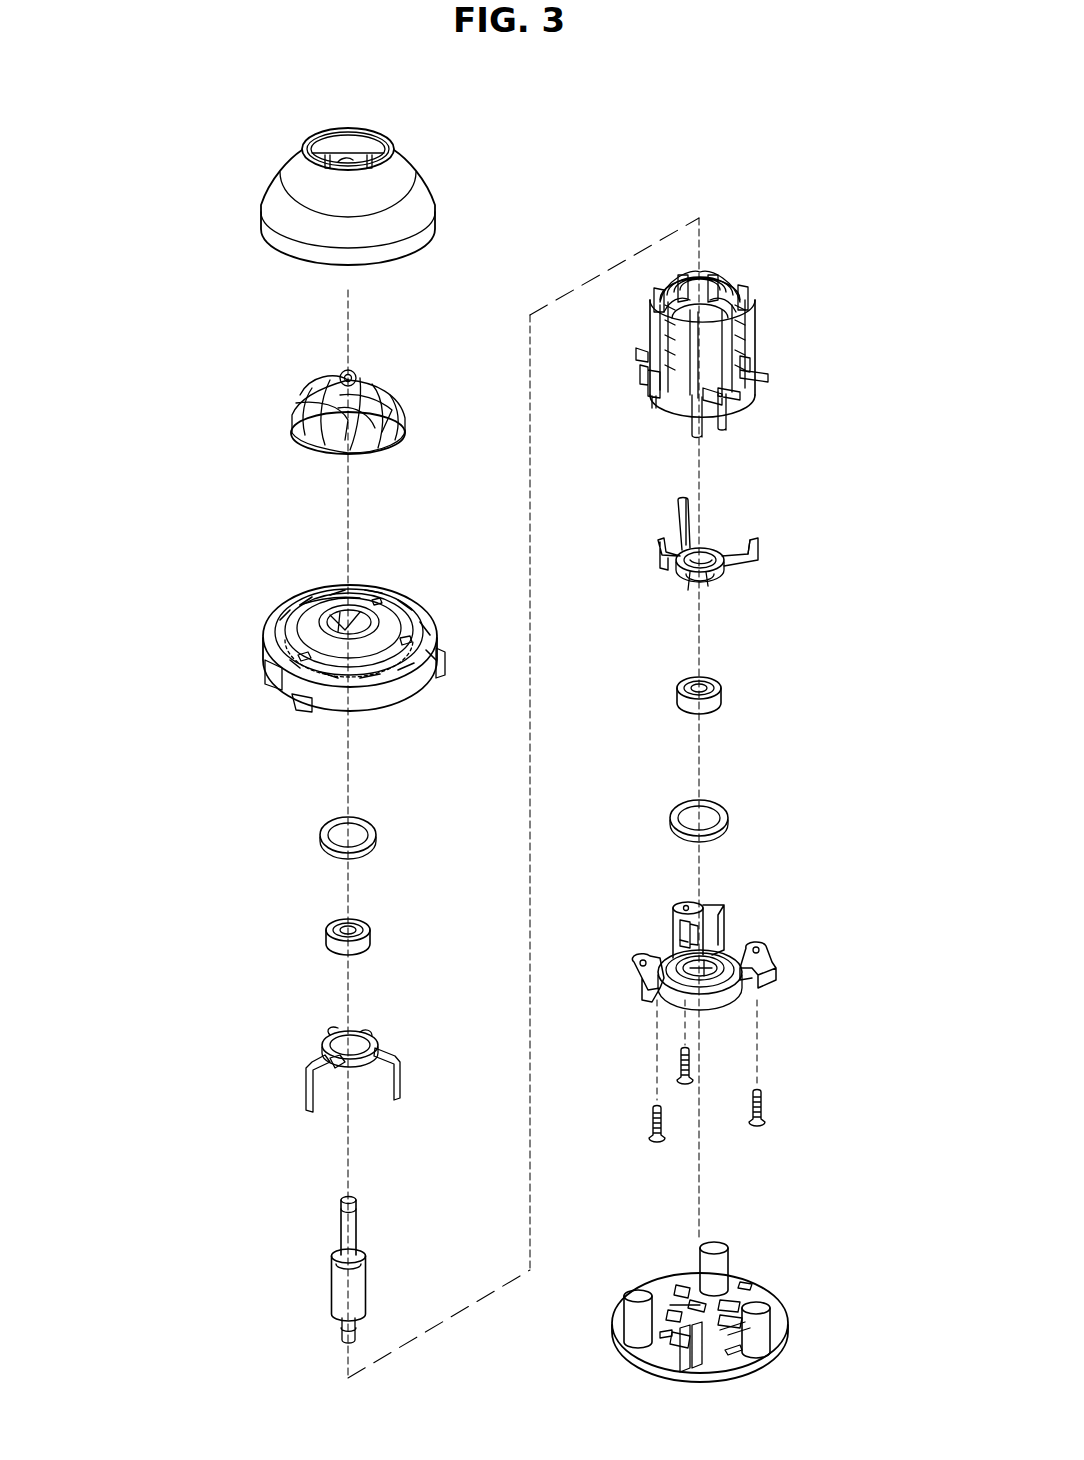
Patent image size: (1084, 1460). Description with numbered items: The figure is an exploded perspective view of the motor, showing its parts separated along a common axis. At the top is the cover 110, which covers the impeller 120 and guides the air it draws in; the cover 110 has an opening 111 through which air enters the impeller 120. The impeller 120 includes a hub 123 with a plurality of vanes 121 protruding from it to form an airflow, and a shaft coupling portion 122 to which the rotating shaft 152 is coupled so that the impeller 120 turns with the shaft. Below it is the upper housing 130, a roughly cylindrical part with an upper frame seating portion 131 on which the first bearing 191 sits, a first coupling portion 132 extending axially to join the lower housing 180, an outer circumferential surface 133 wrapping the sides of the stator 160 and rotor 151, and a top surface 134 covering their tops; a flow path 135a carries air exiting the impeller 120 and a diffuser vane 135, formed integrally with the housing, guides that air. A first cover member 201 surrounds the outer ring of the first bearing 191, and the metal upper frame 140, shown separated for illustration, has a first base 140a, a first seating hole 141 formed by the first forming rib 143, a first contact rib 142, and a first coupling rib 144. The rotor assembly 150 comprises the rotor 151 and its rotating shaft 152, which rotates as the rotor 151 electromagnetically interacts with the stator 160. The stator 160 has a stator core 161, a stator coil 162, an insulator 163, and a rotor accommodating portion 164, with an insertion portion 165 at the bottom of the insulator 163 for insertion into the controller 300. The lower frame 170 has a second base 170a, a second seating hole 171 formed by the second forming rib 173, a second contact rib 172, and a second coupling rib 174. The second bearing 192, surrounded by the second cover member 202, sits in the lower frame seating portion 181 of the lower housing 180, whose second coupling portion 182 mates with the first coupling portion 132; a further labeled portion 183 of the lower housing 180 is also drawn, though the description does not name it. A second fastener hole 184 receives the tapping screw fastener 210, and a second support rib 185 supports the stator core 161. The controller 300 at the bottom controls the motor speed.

The cover 110 is at (228, 196).
The opening 111 is at (346, 156).
The impeller 120 is at (327, 393).
The vanes 121 is at (380, 400).
The shaft coupling portion 122 is at (352, 375).
The hub 123 is at (390, 440).
The upper housing 130 is at (328, 639).
The upper frame seating portion 131 is at (352, 607).
The first coupling portion 132 is at (292, 700).
The outer circumferential surface 133 is at (275, 665).
The top surface 134 is at (385, 615).
The diffuser vane 135 is at (400, 672).
The flow path 135a is at (425, 627).
The upper frame 140 is at (333, 1057).
The first base 140a is at (372, 1038).
The first seating hole 141 is at (352, 1060).
The first contact rib 142 is at (397, 1068).
The first forming rib 143 is at (352, 1046).
The first coupling rib 144 is at (400, 1092).
The rotor assembly 150 is at (327, 1270).
The rotor 151 is at (358, 1286).
The rotating shaft 152 is at (344, 1220).
The stator 160 is at (727, 325).
The stator core 161 is at (750, 346).
The stator coil 162 is at (748, 306).
The insulator 163 is at (735, 378).
The rotor accommodating portion 164 is at (718, 282).
The insertion portion 165 is at (695, 418).
The lower frame 170 is at (741, 557).
The second base 170a is at (695, 586).
The second seating hole 171 is at (705, 558).
The second contact rib 172 is at (685, 516).
The second forming rib 173 is at (710, 584).
The second coupling rib 174 is at (750, 545).
The lower housing 180 is at (727, 944).
The lower frame seating portion 181 is at (705, 960).
The second coupling portion 182 is at (772, 965).
The housing fastening boss 183 is at (740, 980).
The second fastener hole 184 is at (692, 905).
The second support rib 185 is at (690, 936).
The first bearing 191 is at (328, 938).
The second bearing 192 is at (718, 697).
The first cover member 201 is at (330, 836).
The second cover member 202 is at (730, 812).
The fastener 210 is at (755, 1152).
The controller 300 is at (795, 1284).